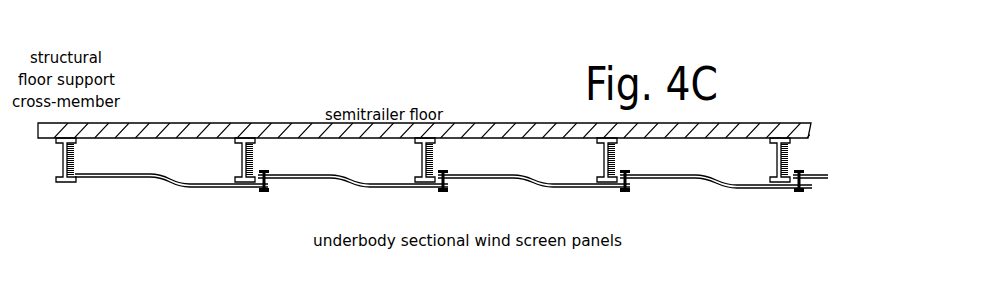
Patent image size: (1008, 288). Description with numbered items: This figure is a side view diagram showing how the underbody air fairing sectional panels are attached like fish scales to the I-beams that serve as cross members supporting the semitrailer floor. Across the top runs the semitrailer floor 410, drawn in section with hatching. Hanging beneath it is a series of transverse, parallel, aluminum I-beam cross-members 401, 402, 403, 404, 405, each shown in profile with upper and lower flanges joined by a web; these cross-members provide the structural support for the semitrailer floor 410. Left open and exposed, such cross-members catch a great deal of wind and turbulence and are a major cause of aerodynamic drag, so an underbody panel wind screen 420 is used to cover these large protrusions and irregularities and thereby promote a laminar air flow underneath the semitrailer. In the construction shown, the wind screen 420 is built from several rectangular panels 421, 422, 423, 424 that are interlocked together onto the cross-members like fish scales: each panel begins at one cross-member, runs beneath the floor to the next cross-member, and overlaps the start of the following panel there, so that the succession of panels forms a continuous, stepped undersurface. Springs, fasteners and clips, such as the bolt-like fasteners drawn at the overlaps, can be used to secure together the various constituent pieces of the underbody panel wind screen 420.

The I-beam cross-member 401 is at (60, 172).
The I-beam cross-member 402 is at (241, 172).
The I-beam cross-member 403 is at (421, 172).
The I-beam cross-member 404 is at (603, 164).
The I-beam cross-member 405 is at (773, 164).
The semitrailer floor 410 is at (532, 126).
The underbody panel wind screen 420 is at (431, 202).
The rectangular panel 421 is at (165, 183).
The rectangular panel 422 is at (316, 179).
The rectangular panel 423 is at (498, 180).
The rectangular panel 424 is at (713, 185).